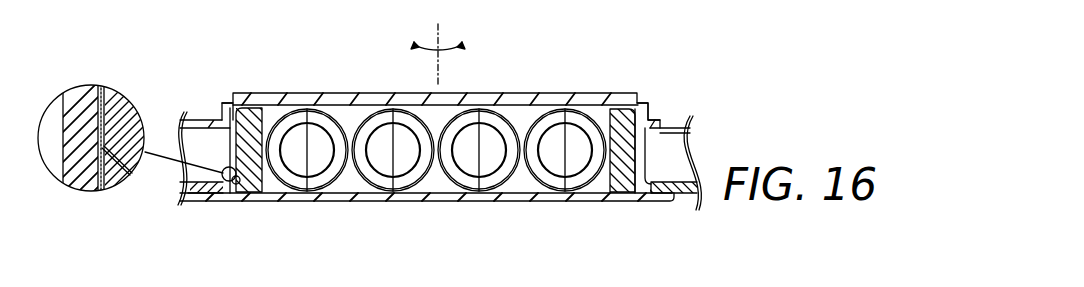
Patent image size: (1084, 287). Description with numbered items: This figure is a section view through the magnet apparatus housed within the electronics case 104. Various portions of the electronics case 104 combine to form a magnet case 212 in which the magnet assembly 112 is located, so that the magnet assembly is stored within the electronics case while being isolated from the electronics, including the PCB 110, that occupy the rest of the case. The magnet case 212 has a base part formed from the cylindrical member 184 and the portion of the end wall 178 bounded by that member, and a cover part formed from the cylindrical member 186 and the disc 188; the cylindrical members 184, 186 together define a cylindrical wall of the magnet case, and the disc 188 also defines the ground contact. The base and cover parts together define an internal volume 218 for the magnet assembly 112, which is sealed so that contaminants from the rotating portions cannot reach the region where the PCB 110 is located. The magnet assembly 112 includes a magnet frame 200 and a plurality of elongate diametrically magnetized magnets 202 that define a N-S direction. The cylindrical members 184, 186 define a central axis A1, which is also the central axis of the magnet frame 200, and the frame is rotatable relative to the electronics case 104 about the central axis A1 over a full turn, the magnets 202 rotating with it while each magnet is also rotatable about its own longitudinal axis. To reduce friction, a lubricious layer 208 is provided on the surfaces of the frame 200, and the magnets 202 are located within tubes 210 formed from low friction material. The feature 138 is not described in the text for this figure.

The central axis A1 is at (438, 42).
The electronics case 104 is at (358, 65).
The PCB 110 is at (677, 200).
The magnet assembly 112 is at (408, 192).
The housing end step 138 is at (657, 117).
The end wall 178 is at (272, 202).
The cylindrical member 184 is at (645, 157).
The cylindrical member 186 is at (220, 110).
The disc 188 is at (292, 93).
The magnet frame 200 is at (120, 113).
The magnet 202 is at (578, 120).
The lubricious layer 208 is at (110, 163).
The tube 210 is at (545, 109).
The magnet case 212 is at (540, 205).
The internal volume 218 is at (437, 185).